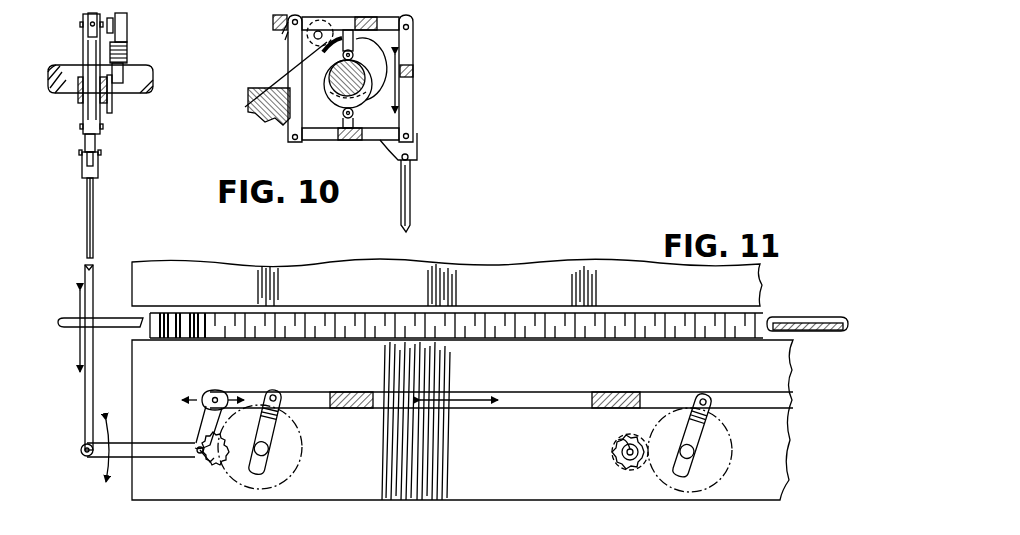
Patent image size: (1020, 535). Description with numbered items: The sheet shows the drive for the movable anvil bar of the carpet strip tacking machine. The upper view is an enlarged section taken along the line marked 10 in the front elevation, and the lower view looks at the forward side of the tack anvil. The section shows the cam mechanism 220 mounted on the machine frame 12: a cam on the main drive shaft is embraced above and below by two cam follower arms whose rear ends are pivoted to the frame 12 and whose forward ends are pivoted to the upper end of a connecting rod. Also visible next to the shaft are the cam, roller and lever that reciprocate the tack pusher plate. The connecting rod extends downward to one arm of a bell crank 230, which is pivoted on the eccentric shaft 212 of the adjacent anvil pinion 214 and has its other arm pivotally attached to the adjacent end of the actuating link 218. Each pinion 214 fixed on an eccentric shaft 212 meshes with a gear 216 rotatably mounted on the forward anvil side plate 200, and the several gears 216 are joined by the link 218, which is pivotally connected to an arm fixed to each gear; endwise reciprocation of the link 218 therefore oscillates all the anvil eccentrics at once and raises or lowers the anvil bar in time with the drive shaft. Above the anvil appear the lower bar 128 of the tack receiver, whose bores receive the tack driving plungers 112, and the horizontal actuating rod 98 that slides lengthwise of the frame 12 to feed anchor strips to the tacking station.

In FIG. 10, the section line 10— 10 is at (63, 17).
In FIG. 10, the machine frame 12 is at (262, 29).
In FIG. 11, the actuating rod 98 is at (68, 318).
In FIG. 11, the tack driving plungers 112 is at (183, 310).
In FIG. 11, the lower bar 128 is at (447, 282).
In FIG. 11, the anvil side plate 200 is at (462, 420).
In FIG. 11, the eccentric shaft 212 is at (197, 468).
In FIG. 11, the pinion 214 is at (192, 463).
In FIG. 11, the gear 216 is at (273, 475).
In FIG. 11, the actuating link 218 is at (527, 393).
In FIG. 10, the cam mechanism 220 is at (418, 68).
In FIG. 11, the bell crank 230 is at (193, 438).